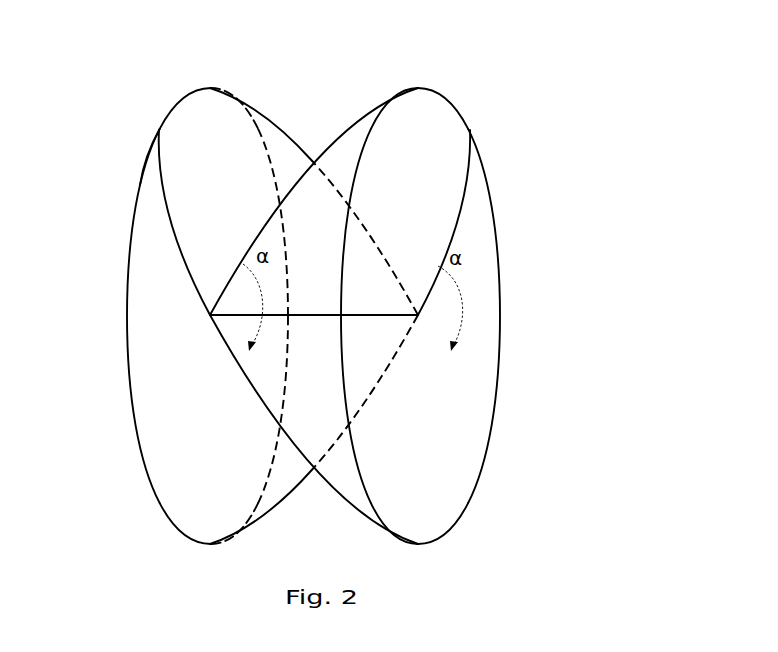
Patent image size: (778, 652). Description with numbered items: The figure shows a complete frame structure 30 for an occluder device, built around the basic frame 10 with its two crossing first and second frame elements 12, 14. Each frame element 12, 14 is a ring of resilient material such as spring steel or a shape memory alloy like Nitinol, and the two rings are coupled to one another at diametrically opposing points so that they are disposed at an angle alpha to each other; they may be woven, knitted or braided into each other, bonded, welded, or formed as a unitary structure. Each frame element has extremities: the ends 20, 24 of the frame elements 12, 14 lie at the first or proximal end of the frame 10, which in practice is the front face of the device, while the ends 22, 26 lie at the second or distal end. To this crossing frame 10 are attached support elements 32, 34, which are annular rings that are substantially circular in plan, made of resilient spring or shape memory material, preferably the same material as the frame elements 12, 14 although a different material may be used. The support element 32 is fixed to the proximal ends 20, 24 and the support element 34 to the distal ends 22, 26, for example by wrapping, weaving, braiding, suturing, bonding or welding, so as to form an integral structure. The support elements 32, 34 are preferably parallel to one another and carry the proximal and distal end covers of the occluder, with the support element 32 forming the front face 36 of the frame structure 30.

The frame 10 is at (410, 76).
The first frame element 12 is at (350, 114).
The second frame element 14 is at (147, 165).
The end of frame element 20 is at (447, 88).
The end of frame element 22 is at (177, 533).
The end of frame element 24 is at (457, 533).
The end of frame element 26 is at (178, 95).
The frame structure 30 is at (600, 107).
The support element 32 is at (503, 275).
The support element 34 is at (125, 312).
The front face 36 is at (565, 352).